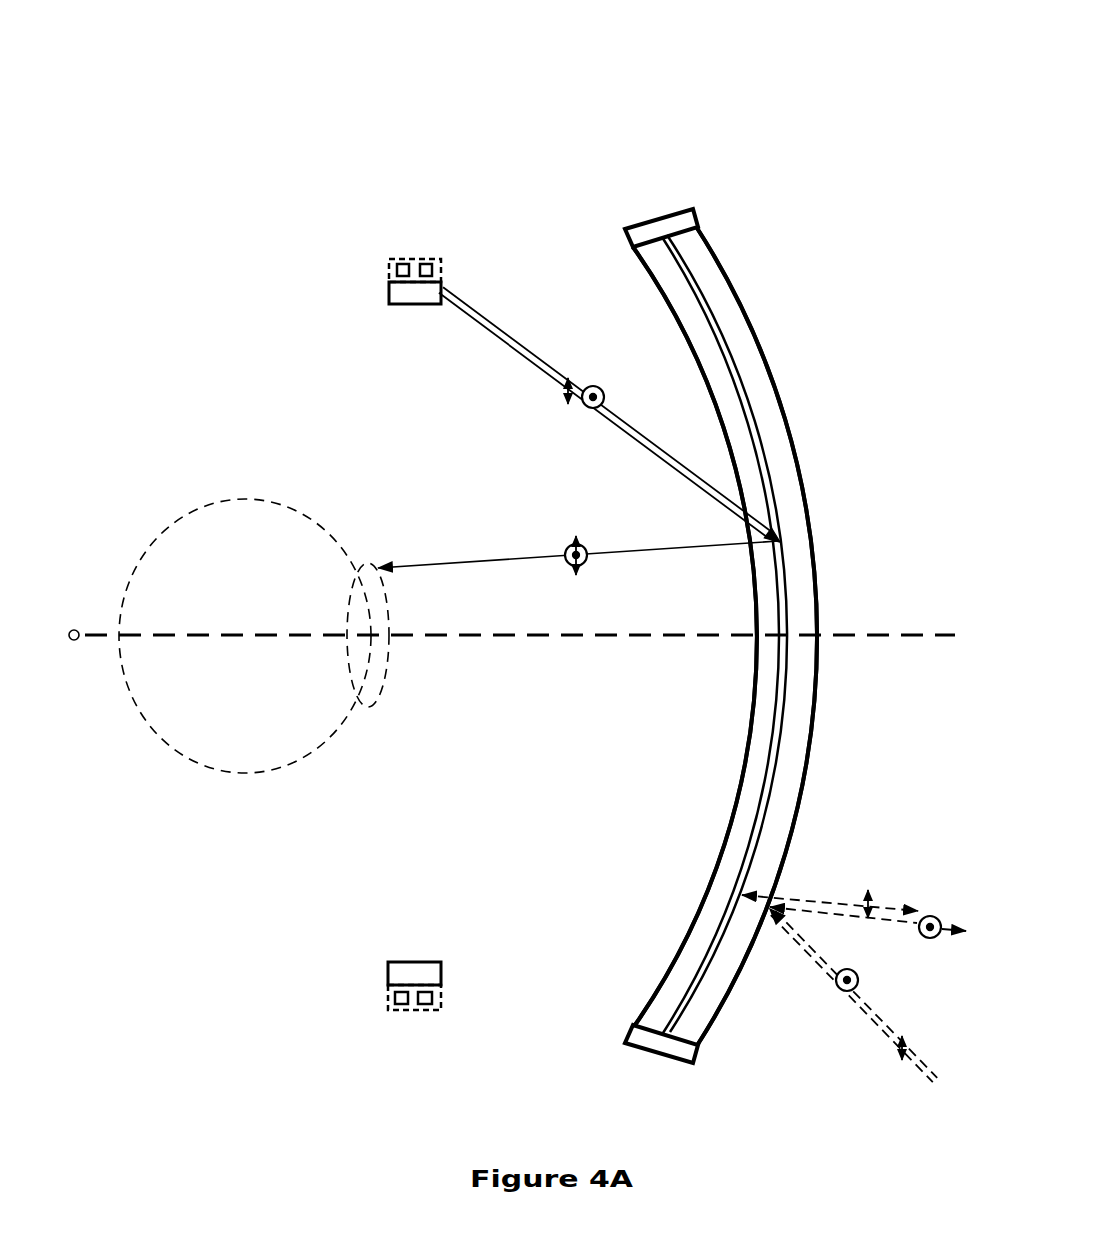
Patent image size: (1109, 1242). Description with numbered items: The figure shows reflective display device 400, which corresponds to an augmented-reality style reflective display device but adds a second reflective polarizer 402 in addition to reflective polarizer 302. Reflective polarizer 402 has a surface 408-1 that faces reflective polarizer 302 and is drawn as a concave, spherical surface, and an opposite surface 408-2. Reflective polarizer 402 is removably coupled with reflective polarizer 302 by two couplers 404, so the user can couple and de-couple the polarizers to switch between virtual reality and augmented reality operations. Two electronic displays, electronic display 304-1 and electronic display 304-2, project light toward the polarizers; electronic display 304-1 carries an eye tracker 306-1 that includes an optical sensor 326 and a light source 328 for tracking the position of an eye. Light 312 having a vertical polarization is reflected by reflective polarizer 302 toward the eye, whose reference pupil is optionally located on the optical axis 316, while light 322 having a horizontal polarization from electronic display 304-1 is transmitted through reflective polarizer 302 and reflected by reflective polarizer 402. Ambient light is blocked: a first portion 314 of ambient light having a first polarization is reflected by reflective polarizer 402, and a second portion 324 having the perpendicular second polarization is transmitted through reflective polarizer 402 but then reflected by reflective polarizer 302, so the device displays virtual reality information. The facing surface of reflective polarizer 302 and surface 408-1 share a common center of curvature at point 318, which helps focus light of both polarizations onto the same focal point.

The reflective display device 400 is at (613, 88).
The reflective polarizer 402 is at (728, 612).
The coupler 404 is at (668, 211).
The reflective polarizer 302 is at (645, 266).
The electronic display 304-1 is at (389, 294).
The electronic display 304-2 is at (388, 977).
The eye tracker 306-1 is at (394, 620).
The optical sensor 326 is at (404, 265).
The light source 328 is at (427, 265).
The light 312 is at (508, 345).
The light 322 is at (522, 345).
The first portion of ambient light 314 is at (903, 920).
The second portion of ambient light 324 is at (938, 1085).
The optical axis 316 is at (892, 640).
The point 318 is at (74, 654).
The surface 408-1 is at (776, 705).
The surface 408-2 is at (820, 720).